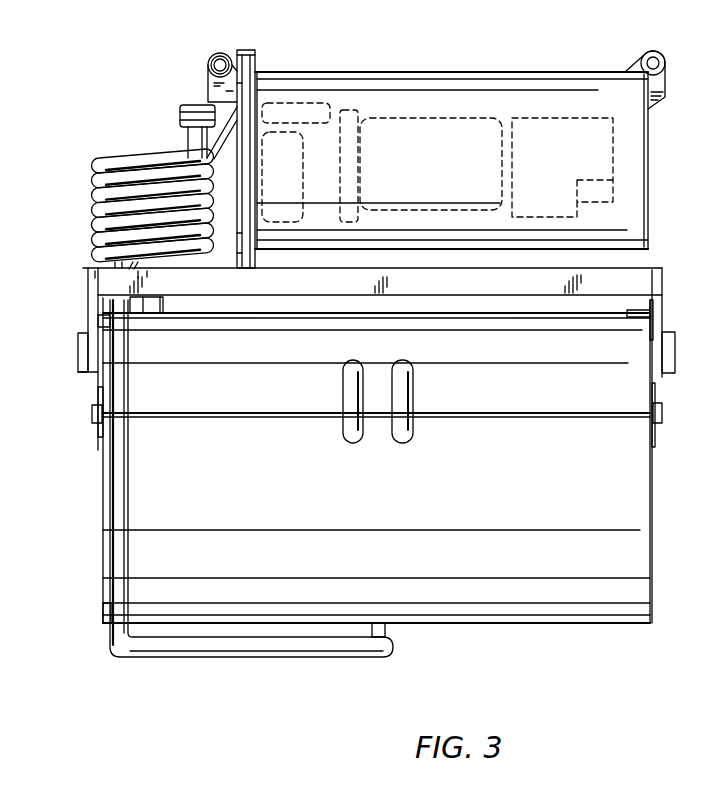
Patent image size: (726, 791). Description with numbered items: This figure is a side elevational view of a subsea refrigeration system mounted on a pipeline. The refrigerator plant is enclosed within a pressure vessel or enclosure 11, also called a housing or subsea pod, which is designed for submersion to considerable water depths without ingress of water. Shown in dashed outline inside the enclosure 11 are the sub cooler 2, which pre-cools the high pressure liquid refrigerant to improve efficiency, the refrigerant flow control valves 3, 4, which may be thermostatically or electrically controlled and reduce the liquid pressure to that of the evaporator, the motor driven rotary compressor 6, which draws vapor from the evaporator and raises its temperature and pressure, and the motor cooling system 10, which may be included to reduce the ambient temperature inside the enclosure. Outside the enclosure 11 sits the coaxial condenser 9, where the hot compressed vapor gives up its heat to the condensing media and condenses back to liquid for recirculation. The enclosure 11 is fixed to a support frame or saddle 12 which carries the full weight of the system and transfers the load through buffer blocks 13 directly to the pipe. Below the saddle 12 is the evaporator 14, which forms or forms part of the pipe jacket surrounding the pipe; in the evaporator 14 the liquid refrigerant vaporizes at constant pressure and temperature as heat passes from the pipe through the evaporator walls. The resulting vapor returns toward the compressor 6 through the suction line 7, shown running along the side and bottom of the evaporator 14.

The sub cooler 2 is at (293, 222).
The refrigerant flow control valve 3 is at (332, 67).
The refrigerant flow control valve 4 is at (324, 113).
The motor driven rotary compressor 6 is at (558, 125).
The suction line 7 is at (227, 655).
The coaxial condenser 9 is at (118, 157).
The motor cooling system 10 is at (348, 152).
The pressure vessel or enclosure 11 is at (296, 70).
The support frame or saddle 12 is at (664, 266).
The buffer blocks 13 is at (83, 368).
The evaporator 14 is at (545, 607).